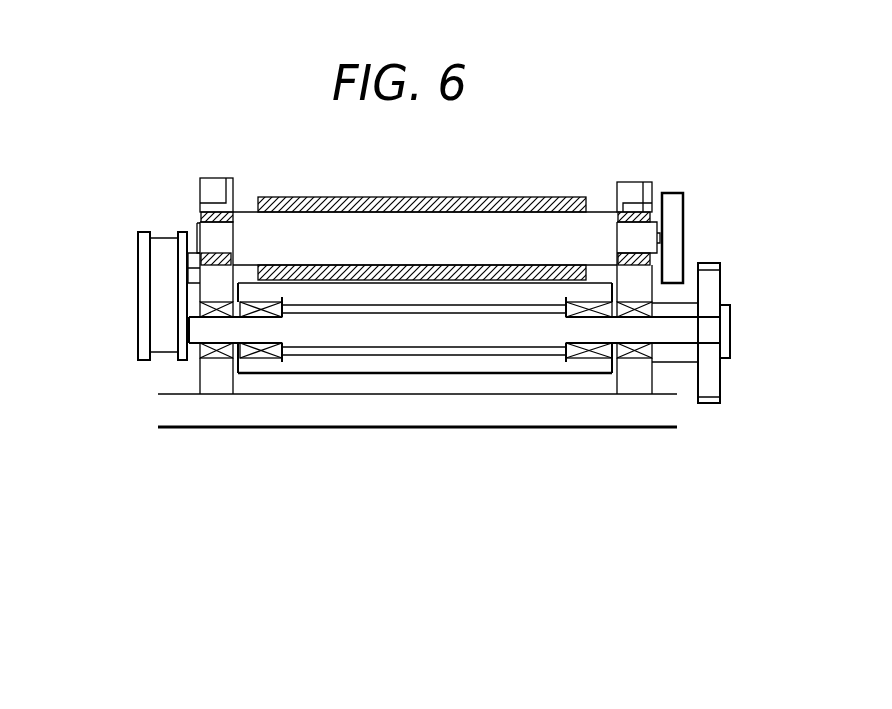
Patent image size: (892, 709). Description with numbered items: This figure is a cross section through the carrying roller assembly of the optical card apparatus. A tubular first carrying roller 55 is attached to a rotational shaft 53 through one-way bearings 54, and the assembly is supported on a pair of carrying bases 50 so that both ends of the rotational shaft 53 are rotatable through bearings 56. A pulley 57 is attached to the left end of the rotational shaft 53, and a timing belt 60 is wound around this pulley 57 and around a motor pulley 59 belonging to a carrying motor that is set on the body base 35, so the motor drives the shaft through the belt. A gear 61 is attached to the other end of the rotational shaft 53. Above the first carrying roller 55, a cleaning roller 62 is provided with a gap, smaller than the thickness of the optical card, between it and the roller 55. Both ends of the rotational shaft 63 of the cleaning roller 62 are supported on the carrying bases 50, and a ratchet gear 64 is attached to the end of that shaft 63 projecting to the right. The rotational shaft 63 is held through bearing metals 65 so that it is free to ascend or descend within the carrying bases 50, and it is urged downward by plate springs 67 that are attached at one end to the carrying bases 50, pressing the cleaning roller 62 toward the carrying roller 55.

The body base 35 is at (483, 412).
The carrying base 50 is at (205, 293).
The rotational shaft 53 is at (407, 337).
The one-way bearing 54 is at (260, 358).
The first carrying roller 55 is at (347, 363).
The bearing 56 is at (215, 360).
The pulley 57 is at (138, 330).
The motor pulley 59 is at (137, 243).
The timing belt 60 is at (162, 338).
The gear 61 is at (707, 267).
The cleaning roller 62 is at (337, 198).
The rotational shaft 63 is at (430, 232).
The ratchet gear 64 is at (670, 212).
The bearing metal 65 is at (202, 217).
The plate spring 67 is at (218, 203).